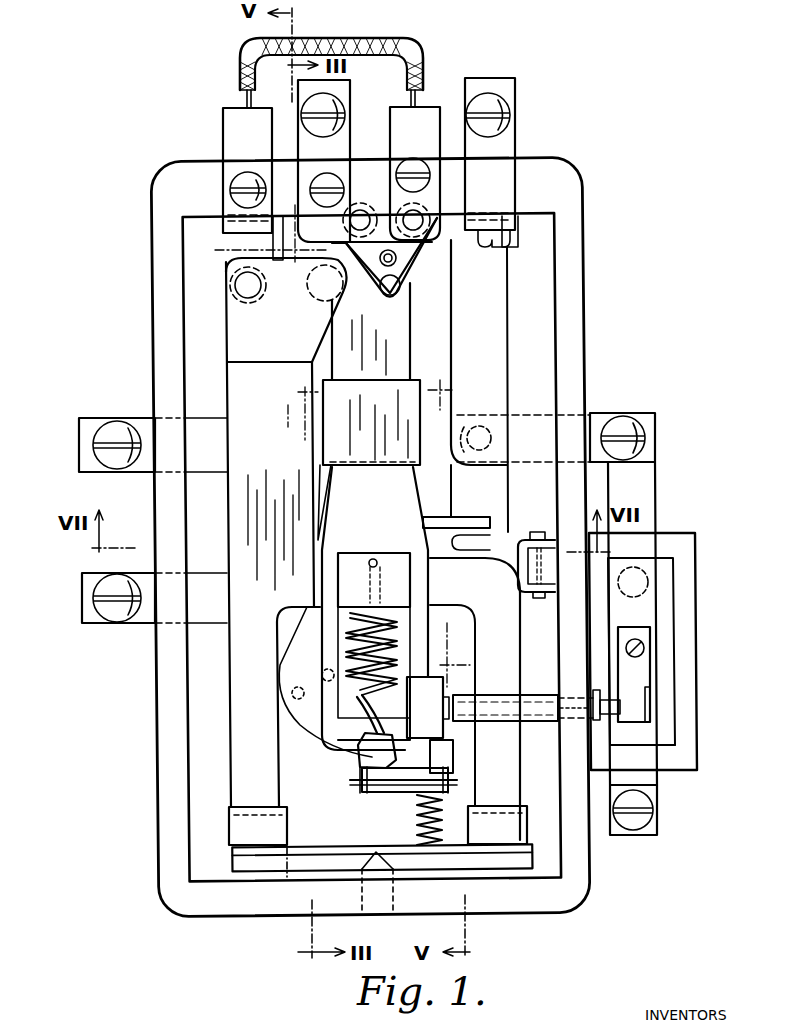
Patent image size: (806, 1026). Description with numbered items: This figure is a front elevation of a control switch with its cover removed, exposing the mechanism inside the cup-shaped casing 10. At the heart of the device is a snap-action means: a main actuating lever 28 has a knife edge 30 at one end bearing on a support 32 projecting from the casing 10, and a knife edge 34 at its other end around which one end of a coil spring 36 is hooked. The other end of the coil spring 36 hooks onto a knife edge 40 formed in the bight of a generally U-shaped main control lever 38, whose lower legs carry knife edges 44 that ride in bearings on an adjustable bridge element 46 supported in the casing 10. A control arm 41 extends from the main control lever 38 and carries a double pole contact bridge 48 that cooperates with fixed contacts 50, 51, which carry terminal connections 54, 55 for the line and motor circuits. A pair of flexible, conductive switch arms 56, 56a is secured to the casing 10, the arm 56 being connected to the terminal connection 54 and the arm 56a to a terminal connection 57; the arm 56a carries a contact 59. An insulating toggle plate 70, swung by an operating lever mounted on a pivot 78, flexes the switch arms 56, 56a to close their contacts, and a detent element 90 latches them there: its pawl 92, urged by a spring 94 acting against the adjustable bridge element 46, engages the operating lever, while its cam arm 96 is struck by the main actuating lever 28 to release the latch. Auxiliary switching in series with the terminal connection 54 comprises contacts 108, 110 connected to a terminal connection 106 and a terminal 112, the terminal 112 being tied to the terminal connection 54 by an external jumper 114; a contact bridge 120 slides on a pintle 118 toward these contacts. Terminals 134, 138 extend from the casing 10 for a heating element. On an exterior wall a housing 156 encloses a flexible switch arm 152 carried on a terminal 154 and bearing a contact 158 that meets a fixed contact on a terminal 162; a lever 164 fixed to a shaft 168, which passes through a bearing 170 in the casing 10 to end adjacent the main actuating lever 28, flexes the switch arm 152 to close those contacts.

The casing 10 is at (566, 186).
The main actuating lever 28 is at (344, 533).
The knife edge 30 is at (343, 452).
The support 32 is at (408, 377).
The knife edge 34 is at (368, 741).
The coil spring 36 is at (395, 620).
The main control lever 38 is at (235, 518).
The knife edge 40 is at (369, 563).
The control arm 41 is at (229, 394).
The knife edge 44 is at (220, 826).
The adjustable bridge element 46 is at (522, 845).
The double pole contact bridge 48 is at (226, 316).
The fixed contact 50 is at (249, 300).
The fixed contact 51 is at (322, 300).
The terminal connection 54 is at (230, 120).
The terminal connection 55 is at (78, 442).
The flexible switch arm 56 is at (272, 248).
The flexible switch arm 56a is at (498, 290).
The terminal connection 57 is at (506, 85).
The contact 59 is at (488, 430).
The toggle plate 70 is at (470, 519).
The pivot 78 is at (536, 528).
The detent element 90 is at (373, 790).
The pawl 92 is at (356, 778).
The spring 94 is at (416, 816).
The cam arm 96 is at (448, 770).
The terminal connection 106 is at (345, 88).
The contact 108 is at (360, 206).
The contact 110 is at (428, 237).
The terminal 112 is at (424, 110).
The external jumper 114 is at (416, 48).
The pintle 118 is at (397, 260).
The contact bridge 120 is at (399, 289).
The terminal 134 is at (655, 426).
The terminal 138 is at (81, 588).
The flexible switch arm 152 is at (647, 731).
The terminal 154 is at (658, 803).
The housing 156 is at (688, 620).
The contact 158 is at (650, 588).
The terminal 162 is at (655, 476).
The lever 164 is at (642, 670).
The shaft 168 is at (575, 711).
The bearing 170 is at (488, 693).